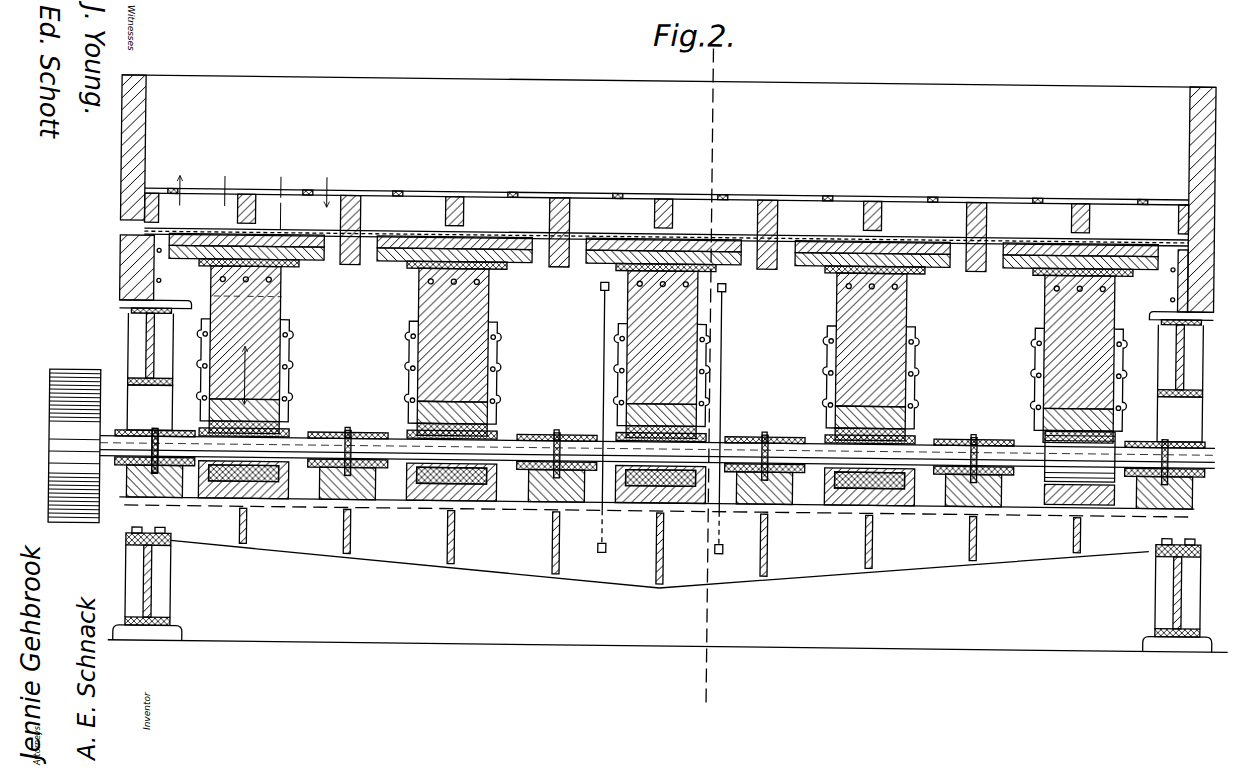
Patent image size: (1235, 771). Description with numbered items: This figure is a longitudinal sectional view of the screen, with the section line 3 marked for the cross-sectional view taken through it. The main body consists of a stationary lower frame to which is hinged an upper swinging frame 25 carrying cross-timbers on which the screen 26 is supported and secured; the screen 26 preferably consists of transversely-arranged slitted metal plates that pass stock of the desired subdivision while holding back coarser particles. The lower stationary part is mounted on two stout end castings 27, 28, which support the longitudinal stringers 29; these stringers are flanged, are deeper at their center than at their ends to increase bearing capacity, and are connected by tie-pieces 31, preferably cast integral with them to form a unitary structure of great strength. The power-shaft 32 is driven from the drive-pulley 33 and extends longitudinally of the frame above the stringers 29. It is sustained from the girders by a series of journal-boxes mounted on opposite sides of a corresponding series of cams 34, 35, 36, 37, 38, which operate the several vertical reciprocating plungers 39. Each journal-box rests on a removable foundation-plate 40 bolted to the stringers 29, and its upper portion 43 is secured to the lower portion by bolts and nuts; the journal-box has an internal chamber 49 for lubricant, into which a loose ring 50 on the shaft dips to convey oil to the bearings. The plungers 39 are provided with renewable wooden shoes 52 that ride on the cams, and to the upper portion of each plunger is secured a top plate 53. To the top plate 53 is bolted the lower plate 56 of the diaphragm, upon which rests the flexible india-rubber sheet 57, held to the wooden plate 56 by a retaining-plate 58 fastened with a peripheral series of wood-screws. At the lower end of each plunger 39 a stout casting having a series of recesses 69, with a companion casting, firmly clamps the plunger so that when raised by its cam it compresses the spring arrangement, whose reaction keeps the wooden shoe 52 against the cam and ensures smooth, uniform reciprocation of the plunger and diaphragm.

The section line 3 3 is at (725, 375).
The upper swinging frame 25 is at (669, 108).
The screen 26 is at (232, 188).
The end casting 27 is at (1176, 342).
The end casting 28 is at (145, 350).
The longitudinal stringers 29 is at (669, 575).
The tie-pieces 31 is at (448, 542).
The power-shaft 32 is at (305, 436).
The drive-pulley 33 is at (72, 372).
The cam 34 is at (270, 478).
The cam 35 is at (470, 480).
The cam 36 is at (680, 480).
The cam 37 is at (888, 480).
The cam 38 is at (1070, 470).
The reciprocating plunger 39 is at (283, 315).
The removable foundation-plate 40 is at (172, 488).
The upper portion of journal-box 43 is at (348, 426).
The internal chamber 49 is at (764, 426).
The loose annulus or ring 50 is at (160, 432).
The renewable wooden shoe 52 is at (280, 400).
The top plate 53 is at (298, 262).
The lower plate of diaphragm 56 is at (190, 248).
The india-rubber sheet 57 is at (224, 228).
The retaining-plate 58 is at (282, 232).
The recesses 69 is at (202, 334).